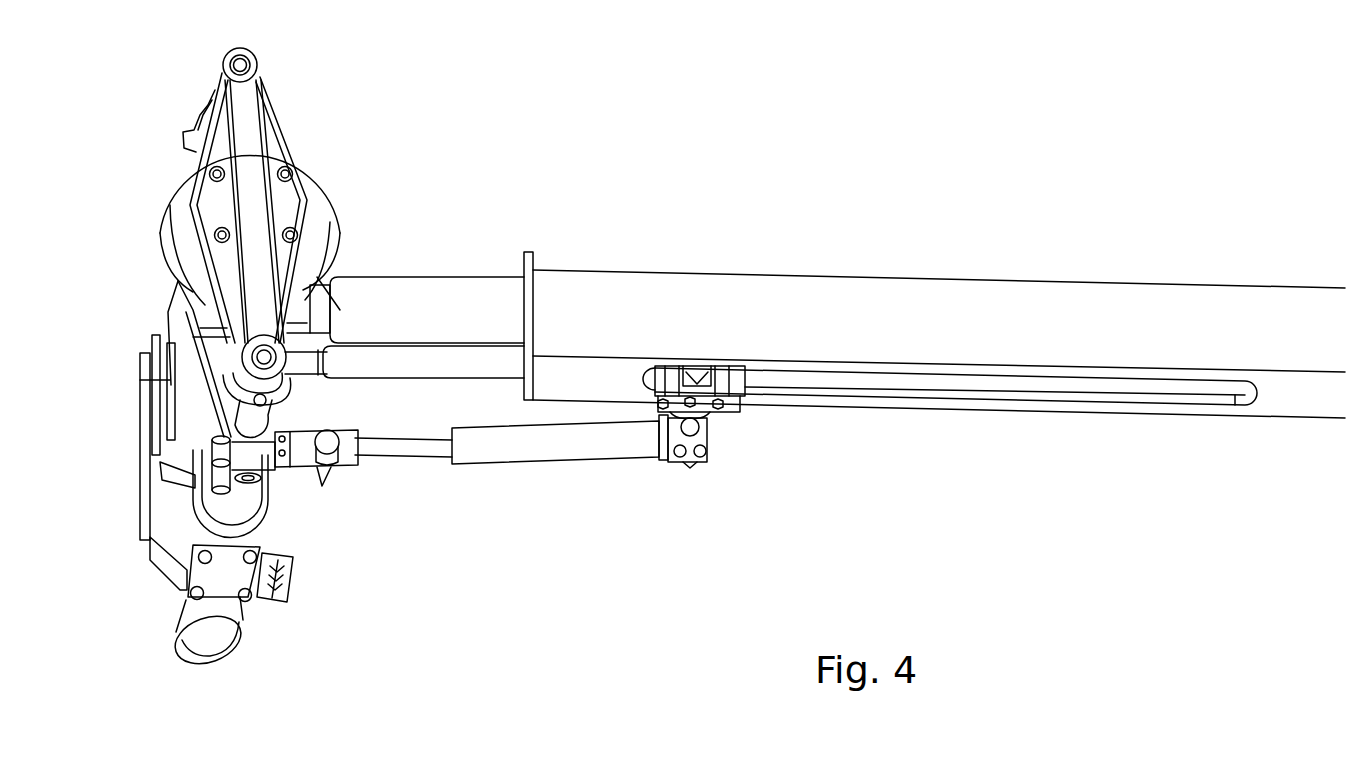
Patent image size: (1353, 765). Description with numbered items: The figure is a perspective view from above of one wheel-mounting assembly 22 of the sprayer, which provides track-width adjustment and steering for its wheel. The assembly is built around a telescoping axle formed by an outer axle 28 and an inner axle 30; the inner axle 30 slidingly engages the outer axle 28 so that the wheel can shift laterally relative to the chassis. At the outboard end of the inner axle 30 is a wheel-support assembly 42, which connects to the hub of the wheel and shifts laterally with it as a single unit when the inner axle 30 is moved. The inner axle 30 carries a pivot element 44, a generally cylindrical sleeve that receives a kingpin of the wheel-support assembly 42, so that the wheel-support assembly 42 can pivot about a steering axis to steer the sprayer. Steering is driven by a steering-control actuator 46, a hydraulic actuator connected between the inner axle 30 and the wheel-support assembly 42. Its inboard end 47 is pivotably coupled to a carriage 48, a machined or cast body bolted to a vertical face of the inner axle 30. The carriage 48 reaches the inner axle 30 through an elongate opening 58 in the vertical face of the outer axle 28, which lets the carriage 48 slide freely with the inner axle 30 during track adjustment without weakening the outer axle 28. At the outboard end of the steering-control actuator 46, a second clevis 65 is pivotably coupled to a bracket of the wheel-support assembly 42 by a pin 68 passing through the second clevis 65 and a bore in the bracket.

The wheel-mounting assembly 22 is at (480, 193).
The outer axle 28 is at (656, 269).
The inner axle 30 is at (426, 291).
The wheel-support assembly 42 is at (173, 297).
The pivot element 44 is at (187, 360).
The steering-control actuator 46 is at (545, 461).
The inboard end 47 is at (660, 466).
The carriage 48 is at (722, 418).
The opening 58 is at (898, 378).
The second clevis 65 is at (344, 464).
The pin 68 is at (326, 466).